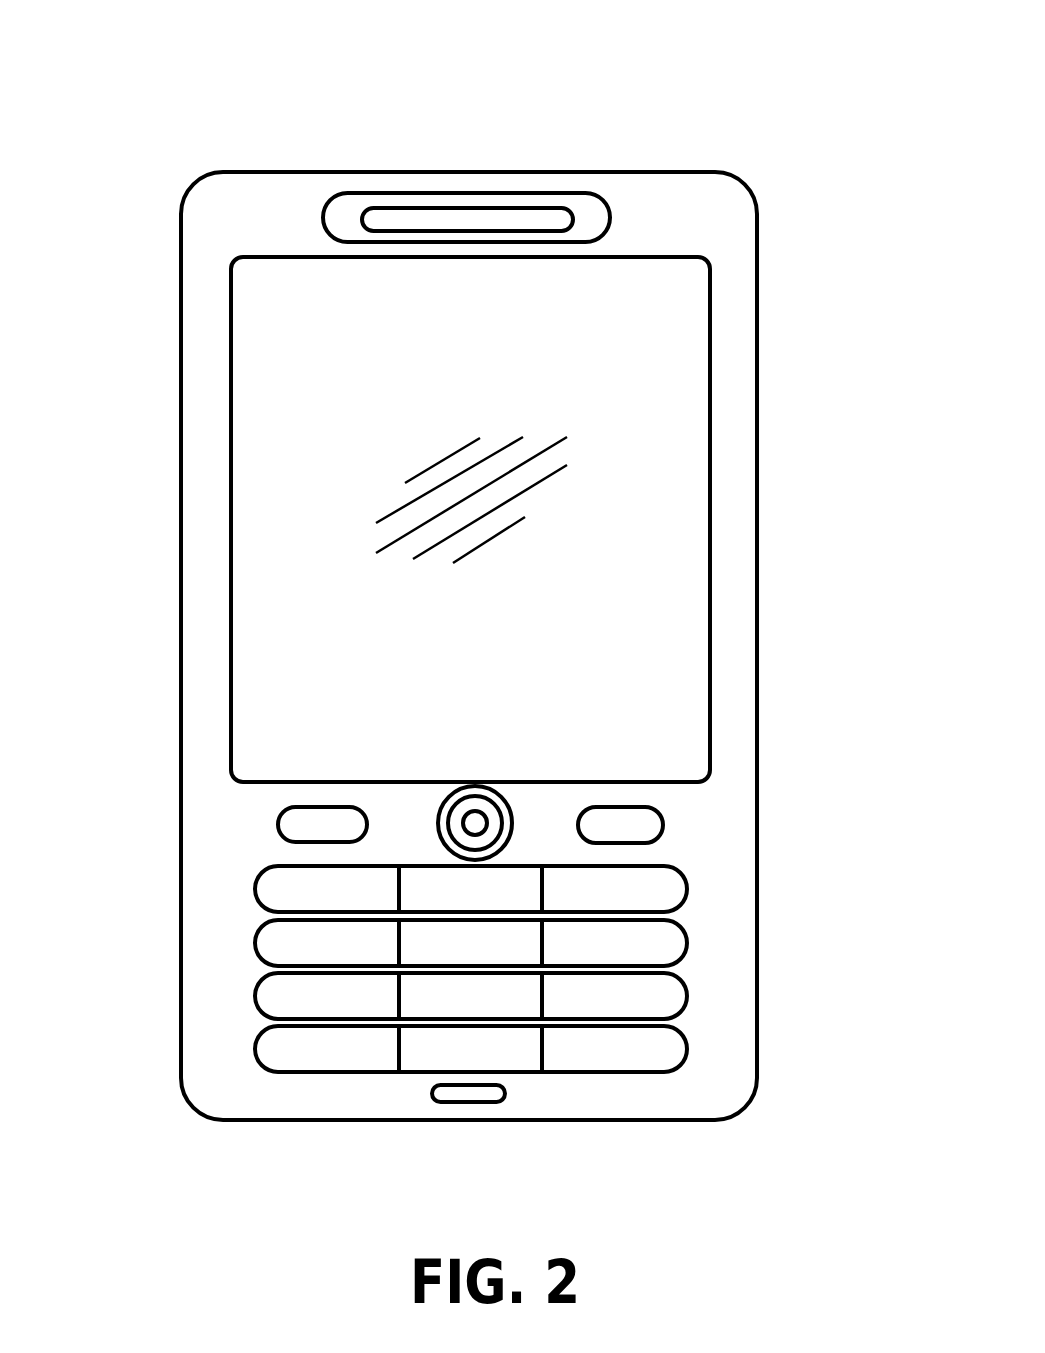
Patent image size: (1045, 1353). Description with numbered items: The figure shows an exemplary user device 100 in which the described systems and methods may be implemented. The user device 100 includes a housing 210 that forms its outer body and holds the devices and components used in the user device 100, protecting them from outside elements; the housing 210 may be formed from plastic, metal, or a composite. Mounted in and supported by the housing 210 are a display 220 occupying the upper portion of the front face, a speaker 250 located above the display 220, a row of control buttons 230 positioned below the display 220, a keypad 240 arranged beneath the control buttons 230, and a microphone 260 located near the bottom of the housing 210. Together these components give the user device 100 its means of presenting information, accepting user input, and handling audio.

The user device 100 is at (205, 50).
The housing 210 is at (181, 238).
The display 220 is at (673, 430).
The control buttons 230 is at (594, 823).
The keypad 240 is at (587, 970).
The speaker 250 is at (612, 216).
The microphone 260 is at (468, 1100).